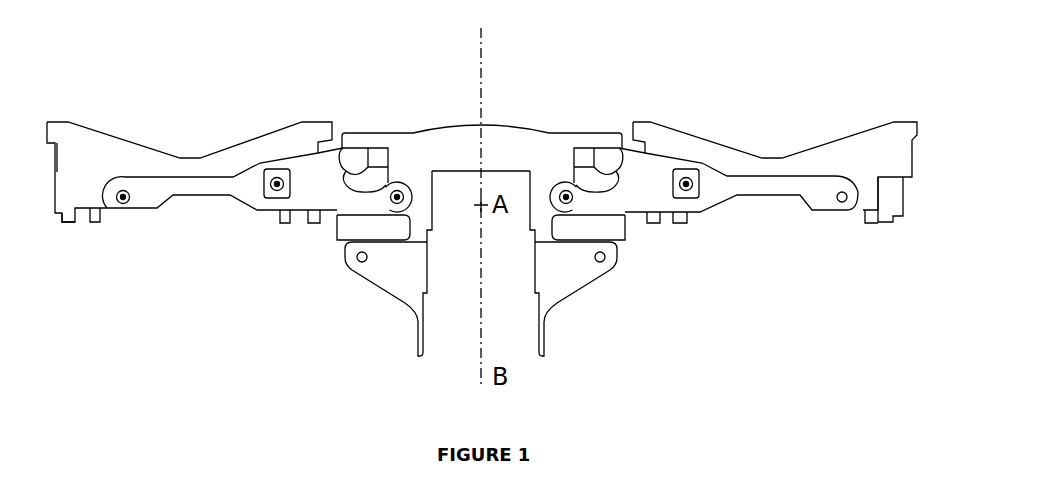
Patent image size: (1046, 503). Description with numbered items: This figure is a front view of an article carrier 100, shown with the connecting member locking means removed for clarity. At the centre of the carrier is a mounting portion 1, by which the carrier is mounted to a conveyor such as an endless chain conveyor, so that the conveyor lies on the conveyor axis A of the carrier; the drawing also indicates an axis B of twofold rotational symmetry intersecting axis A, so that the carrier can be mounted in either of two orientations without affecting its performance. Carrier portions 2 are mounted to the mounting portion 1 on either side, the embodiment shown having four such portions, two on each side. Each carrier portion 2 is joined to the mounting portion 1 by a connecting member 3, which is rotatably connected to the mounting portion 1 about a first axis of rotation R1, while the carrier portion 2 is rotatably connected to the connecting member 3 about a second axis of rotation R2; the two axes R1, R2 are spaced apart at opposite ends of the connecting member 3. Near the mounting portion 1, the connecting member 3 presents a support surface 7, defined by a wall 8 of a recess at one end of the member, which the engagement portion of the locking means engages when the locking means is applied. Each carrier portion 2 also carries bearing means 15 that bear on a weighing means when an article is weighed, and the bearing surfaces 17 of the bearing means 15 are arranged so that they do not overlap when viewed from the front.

The article carrier 100 is at (605, 65).
The mounting portion 1 is at (460, 127).
The carrier portion 2 is at (97, 138).
The connecting member 3 is at (190, 190).
The support surface 7 is at (345, 147).
The wall 8 is at (360, 193).
The bearing means 15 is at (687, 215).
The bearing surface 17 is at (70, 226).
The first axis of rotation R1 is at (410, 188).
The second axis of rotation R2 is at (131, 212).